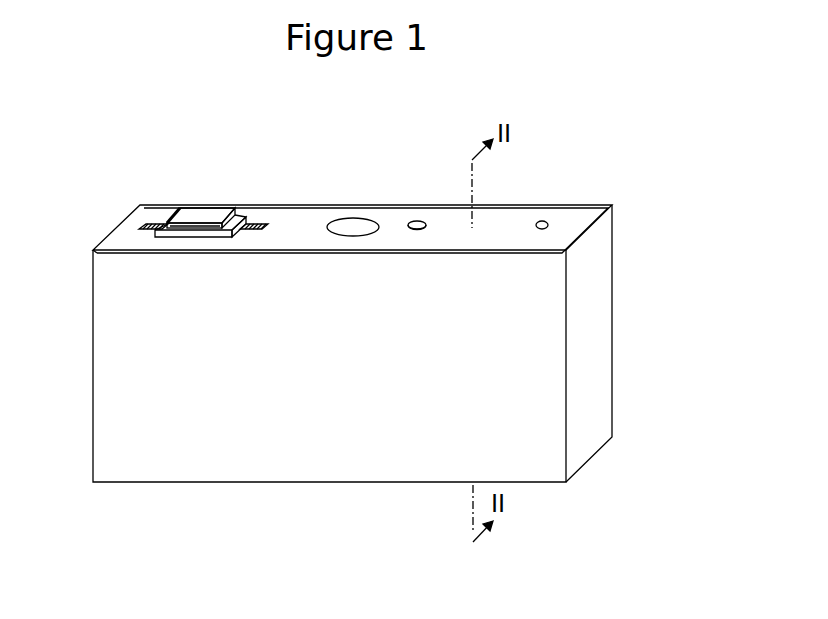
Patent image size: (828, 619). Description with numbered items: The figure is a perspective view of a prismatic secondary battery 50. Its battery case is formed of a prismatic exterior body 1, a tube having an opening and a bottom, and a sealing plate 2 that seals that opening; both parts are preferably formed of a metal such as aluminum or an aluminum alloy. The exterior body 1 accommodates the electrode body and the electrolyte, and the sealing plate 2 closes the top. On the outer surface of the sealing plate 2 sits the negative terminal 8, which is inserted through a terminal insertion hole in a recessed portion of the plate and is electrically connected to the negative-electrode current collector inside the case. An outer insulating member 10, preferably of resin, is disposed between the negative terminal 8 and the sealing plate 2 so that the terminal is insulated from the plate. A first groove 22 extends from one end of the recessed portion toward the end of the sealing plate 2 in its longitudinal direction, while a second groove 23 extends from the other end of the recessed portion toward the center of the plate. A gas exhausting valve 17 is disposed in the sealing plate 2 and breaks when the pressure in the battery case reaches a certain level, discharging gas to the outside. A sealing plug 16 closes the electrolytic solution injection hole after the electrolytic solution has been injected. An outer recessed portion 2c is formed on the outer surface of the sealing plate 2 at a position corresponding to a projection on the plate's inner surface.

The prismatic secondary battery 50 is at (90, 132).
The prismatic exterior body 1 is at (590, 337).
The sealing plate 2 is at (513, 225).
The outer recessed portion 2c is at (547, 223).
The negative terminal 8 is at (205, 213).
The outer insulating member 10 is at (253, 218).
The sealing plug 16 is at (418, 222).
The gas exhausting valve 17 is at (345, 237).
The first groove 22 is at (155, 227).
The second groove 23 is at (268, 228).